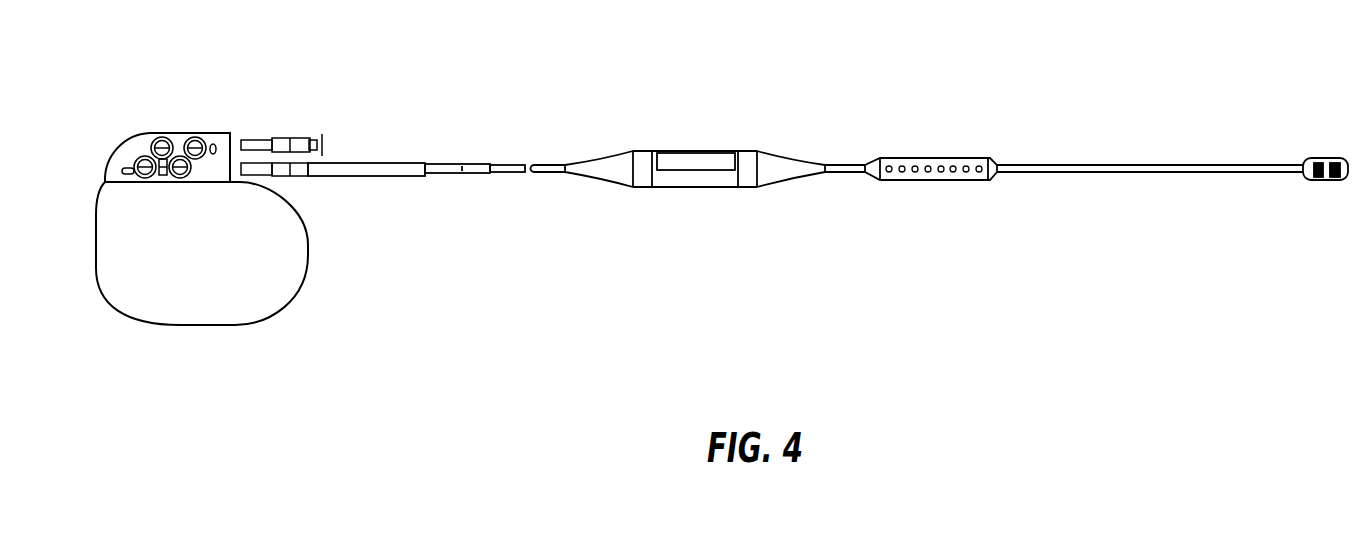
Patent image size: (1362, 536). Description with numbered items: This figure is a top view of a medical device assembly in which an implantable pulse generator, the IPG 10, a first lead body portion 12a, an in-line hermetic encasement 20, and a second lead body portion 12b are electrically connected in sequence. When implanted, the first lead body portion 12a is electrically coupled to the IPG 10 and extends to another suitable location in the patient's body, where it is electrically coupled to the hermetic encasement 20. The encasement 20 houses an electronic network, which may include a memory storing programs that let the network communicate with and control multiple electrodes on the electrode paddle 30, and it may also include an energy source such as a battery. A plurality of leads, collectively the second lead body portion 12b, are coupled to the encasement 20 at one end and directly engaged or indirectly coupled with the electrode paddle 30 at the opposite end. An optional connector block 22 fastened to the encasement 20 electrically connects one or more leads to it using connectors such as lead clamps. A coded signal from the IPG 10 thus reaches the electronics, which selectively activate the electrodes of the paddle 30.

The IPG 10 is at (227, 260).
The first lead body portion 12a is at (550, 173).
The second lead body portion 12b is at (1110, 165).
The in-line hermetic encasement 20 is at (690, 167).
The connector block 22 is at (927, 172).
The electrode paddle 30 is at (1325, 155).